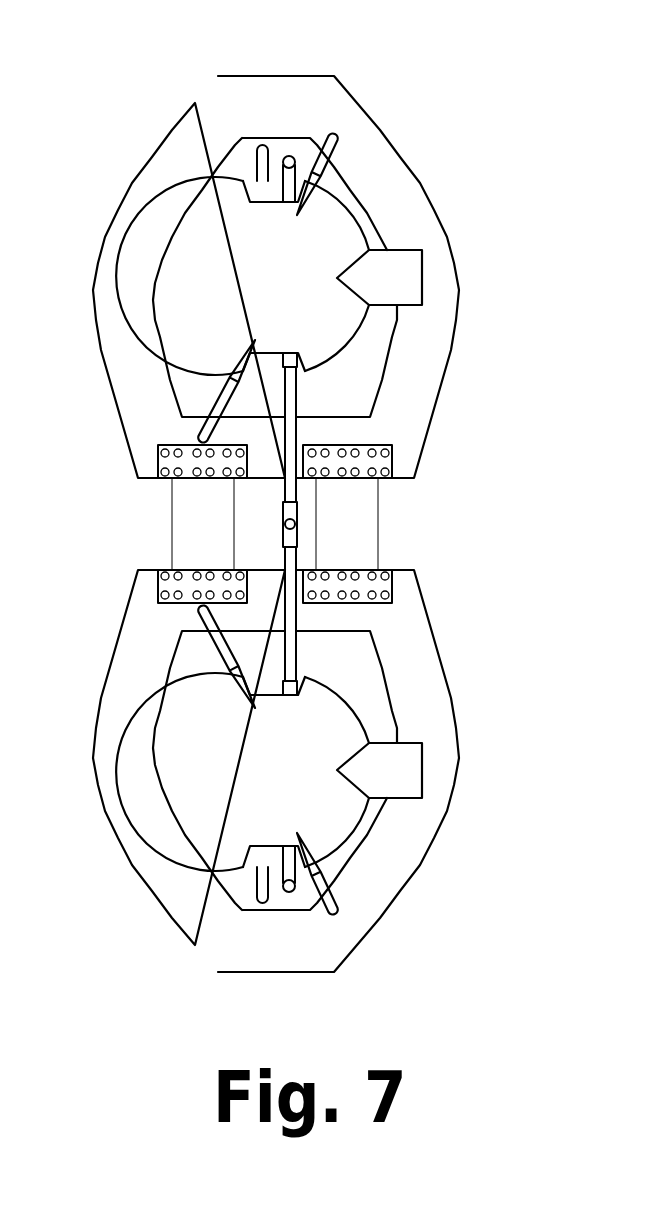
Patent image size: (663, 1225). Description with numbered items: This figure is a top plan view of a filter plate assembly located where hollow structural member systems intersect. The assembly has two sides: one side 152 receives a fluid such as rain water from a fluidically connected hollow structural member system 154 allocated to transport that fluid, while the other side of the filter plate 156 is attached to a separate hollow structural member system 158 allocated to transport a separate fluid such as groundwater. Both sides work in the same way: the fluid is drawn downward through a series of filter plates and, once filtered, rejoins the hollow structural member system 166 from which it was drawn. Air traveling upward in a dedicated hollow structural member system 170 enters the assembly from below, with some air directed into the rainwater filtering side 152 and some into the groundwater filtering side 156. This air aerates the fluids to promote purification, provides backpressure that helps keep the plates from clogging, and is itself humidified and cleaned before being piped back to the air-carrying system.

The one side of the filter plate structure 152 is at (203, 793).
The hollow structural member system 154 is at (294, 891).
The other side of the filter plate 156 is at (343, 329).
The separate hollow structural member system 158 is at (289, 156).
The hollow structural member system 166 is at (243, 907).
The dedicated hollow structural member system 170 is at (293, 558).